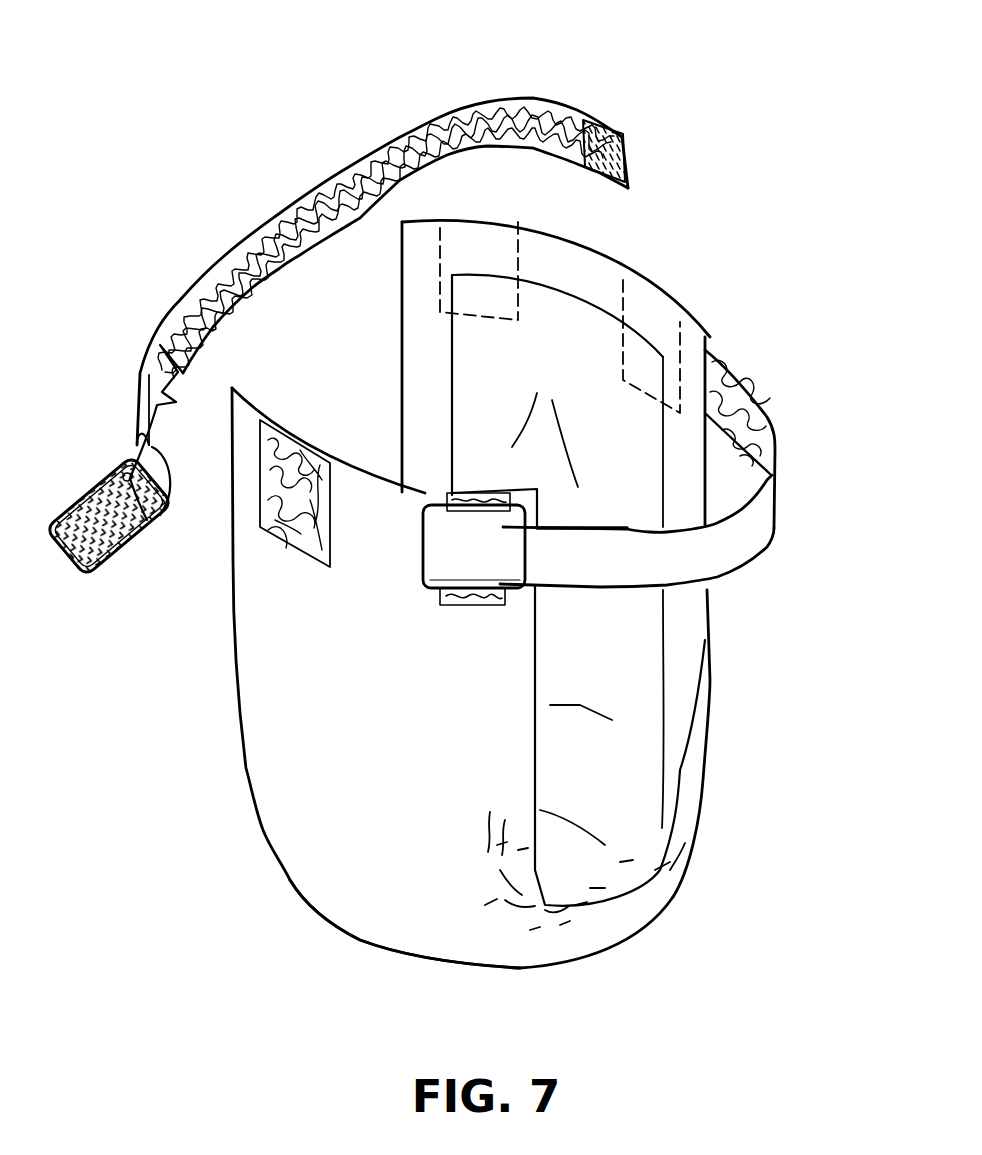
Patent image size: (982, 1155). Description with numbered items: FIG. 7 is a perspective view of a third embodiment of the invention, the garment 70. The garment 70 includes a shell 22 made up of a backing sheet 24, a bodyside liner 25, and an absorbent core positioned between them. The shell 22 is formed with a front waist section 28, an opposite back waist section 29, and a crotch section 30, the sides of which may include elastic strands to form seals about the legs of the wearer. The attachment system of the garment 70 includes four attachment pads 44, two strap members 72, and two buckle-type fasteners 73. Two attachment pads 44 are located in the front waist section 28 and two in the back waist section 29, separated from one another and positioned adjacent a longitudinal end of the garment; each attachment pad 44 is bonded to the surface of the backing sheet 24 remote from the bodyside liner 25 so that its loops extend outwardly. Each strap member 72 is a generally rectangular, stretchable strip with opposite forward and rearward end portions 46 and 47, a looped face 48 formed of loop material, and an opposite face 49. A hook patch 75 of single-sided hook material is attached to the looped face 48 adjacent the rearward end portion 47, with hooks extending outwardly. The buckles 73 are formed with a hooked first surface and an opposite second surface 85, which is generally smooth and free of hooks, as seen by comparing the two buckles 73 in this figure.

The shell 22 is at (235, 773).
The backing sheet 24 is at (390, 772).
The bodyside liner 25 is at (616, 777).
The front waist section 28 is at (358, 448).
The back waist section 29 is at (598, 242).
The crotch section 30 is at (412, 915).
The attachment pad 44 is at (520, 222).
The forward end portion 46 is at (172, 408).
The rearward end portion 47 is at (583, 98).
The looped face 48 is at (345, 172).
The opposite face 49 is at (158, 447).
The garment 70 is at (733, 955).
The strap member 72 is at (257, 227).
The buckle 73 is at (86, 488).
The hook patch 75 is at (600, 140).
The second surface 85 is at (448, 572).